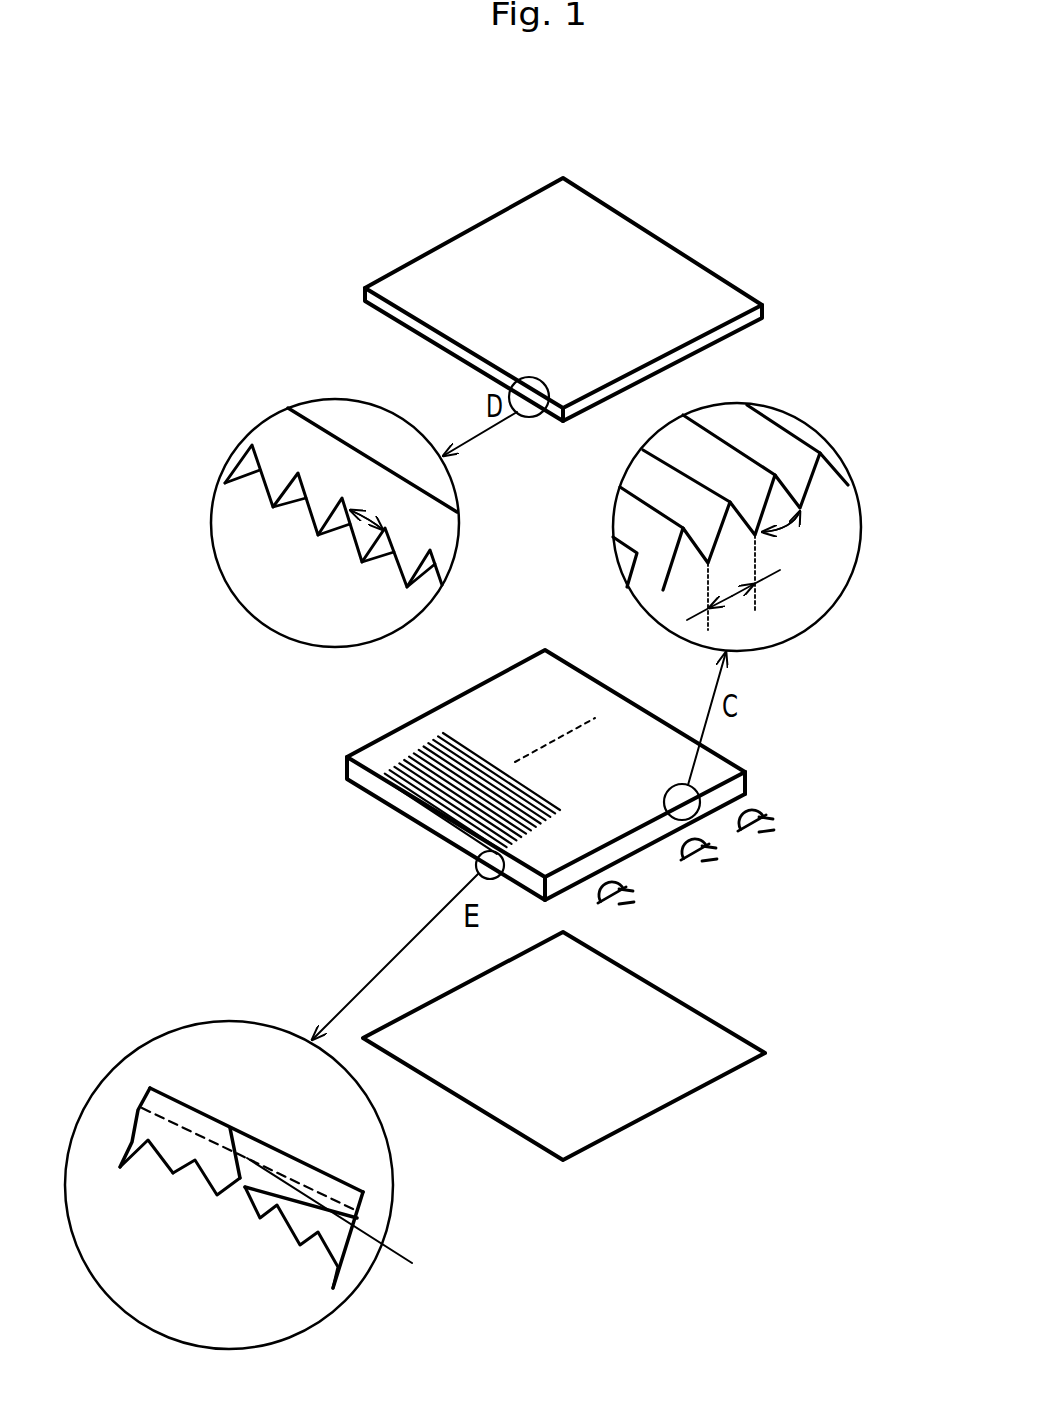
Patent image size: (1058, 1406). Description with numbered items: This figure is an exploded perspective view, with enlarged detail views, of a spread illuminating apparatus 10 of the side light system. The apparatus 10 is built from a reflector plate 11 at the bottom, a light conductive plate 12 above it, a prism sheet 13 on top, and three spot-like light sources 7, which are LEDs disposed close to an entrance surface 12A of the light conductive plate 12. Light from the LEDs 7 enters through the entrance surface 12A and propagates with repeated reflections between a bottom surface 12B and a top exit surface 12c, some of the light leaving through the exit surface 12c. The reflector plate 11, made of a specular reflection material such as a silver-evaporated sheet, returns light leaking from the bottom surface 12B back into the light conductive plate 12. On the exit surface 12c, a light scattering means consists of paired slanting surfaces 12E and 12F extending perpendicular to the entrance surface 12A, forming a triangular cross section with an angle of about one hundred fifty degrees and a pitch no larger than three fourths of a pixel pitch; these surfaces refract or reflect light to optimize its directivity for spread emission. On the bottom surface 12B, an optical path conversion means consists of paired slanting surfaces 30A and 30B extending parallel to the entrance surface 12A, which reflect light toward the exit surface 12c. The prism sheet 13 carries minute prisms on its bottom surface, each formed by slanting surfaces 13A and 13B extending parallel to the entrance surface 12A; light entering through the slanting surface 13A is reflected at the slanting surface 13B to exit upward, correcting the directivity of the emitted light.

The spread illuminating apparatus 10 is at (457, 222).
The prism sheet 13 is at (640, 270).
The slanting surface 13A is at (290, 490).
The slanting surface 13B is at (303, 507).
The light conductive plate 12 is at (388, 713).
The exit surface 12c is at (515, 690).
The entrance surface 12A is at (745, 772).
The bottom surface 12B is at (397, 793).
The slanting surface 12E is at (707, 457).
The slanting surface 12F is at (793, 457).
The slanting surface 30A is at (155, 1157).
The slanting surface 30B is at (185, 1173).
The spot-like light source 7 is at (622, 908).
The reflector plate 11 is at (657, 1113).